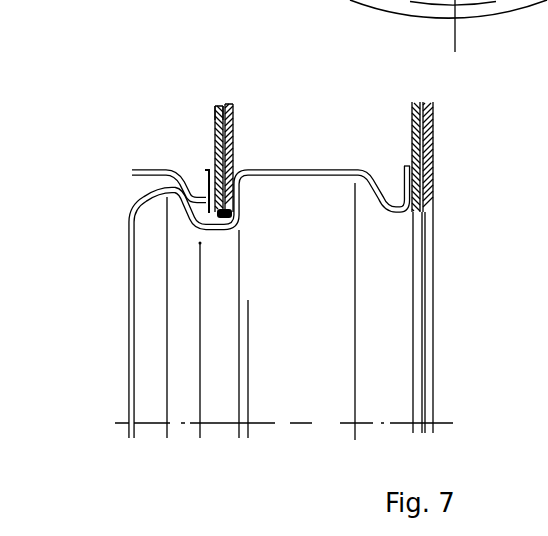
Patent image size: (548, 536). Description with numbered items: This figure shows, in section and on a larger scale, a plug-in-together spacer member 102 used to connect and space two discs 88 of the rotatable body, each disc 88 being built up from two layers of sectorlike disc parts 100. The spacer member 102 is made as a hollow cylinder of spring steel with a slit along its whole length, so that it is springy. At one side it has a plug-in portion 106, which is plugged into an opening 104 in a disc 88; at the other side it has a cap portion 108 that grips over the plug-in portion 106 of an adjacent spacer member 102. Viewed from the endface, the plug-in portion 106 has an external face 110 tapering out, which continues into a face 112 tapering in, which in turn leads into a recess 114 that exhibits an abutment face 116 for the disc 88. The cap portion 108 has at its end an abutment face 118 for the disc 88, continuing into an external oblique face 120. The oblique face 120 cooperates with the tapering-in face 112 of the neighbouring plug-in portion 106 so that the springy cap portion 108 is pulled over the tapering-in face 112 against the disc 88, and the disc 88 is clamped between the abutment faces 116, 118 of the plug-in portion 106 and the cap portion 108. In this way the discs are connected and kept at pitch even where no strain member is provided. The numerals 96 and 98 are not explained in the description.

The disc 88 is at (247, 93).
The sealing strip 96 is at (207, 114).
The sealing strip portion 98 is at (249, 146).
The sectorlike disc part 100 is at (228, 105).
The spacer member 102 is at (337, 332).
The opening 104 is at (218, 216).
The plug-in portion 106 is at (180, 245).
The cap portion 108 is at (387, 257).
The external face tapering out 110 is at (147, 167).
The face tapering in 112 is at (185, 192).
The recess 114 is at (229, 214).
The abutment face 116 is at (230, 197).
The abutment face 118 is at (433, 184).
The external oblique face 120 is at (377, 185).